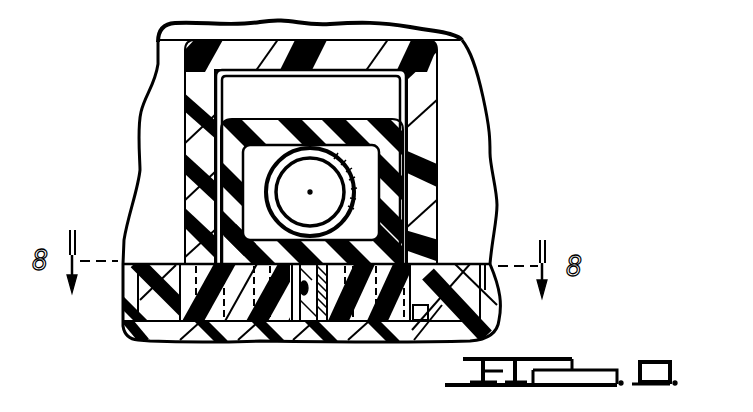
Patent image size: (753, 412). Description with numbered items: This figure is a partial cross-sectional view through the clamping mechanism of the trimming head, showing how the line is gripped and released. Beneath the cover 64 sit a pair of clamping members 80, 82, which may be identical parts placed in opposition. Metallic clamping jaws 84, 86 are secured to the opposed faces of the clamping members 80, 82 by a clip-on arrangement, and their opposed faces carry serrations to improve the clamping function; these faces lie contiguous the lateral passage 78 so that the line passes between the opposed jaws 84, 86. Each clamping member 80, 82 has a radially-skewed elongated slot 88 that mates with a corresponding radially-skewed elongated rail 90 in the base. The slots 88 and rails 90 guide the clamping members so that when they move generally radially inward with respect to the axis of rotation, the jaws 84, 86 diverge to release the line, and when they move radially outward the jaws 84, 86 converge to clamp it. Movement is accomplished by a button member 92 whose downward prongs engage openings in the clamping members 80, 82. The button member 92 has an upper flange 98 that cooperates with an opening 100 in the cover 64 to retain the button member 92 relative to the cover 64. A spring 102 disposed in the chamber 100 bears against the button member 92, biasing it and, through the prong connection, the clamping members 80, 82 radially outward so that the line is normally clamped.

The cover 64 is at (441, 67).
The lateral passage 78 is at (298, 341).
The clamping member 80 is at (226, 334).
The clamping member 82 is at (366, 341).
The clamping jaw 84 is at (283, 341).
The clamping jaw 86 is at (320, 341).
The radially-skewed elongated slot 88 is at (424, 321).
The radially-skewed elongated rail 90 is at (450, 268).
The button member 92 is at (409, 207).
The upper flange 98 is at (337, 70).
The opening 100 is at (370, 72).
The spring 102 is at (298, 120).